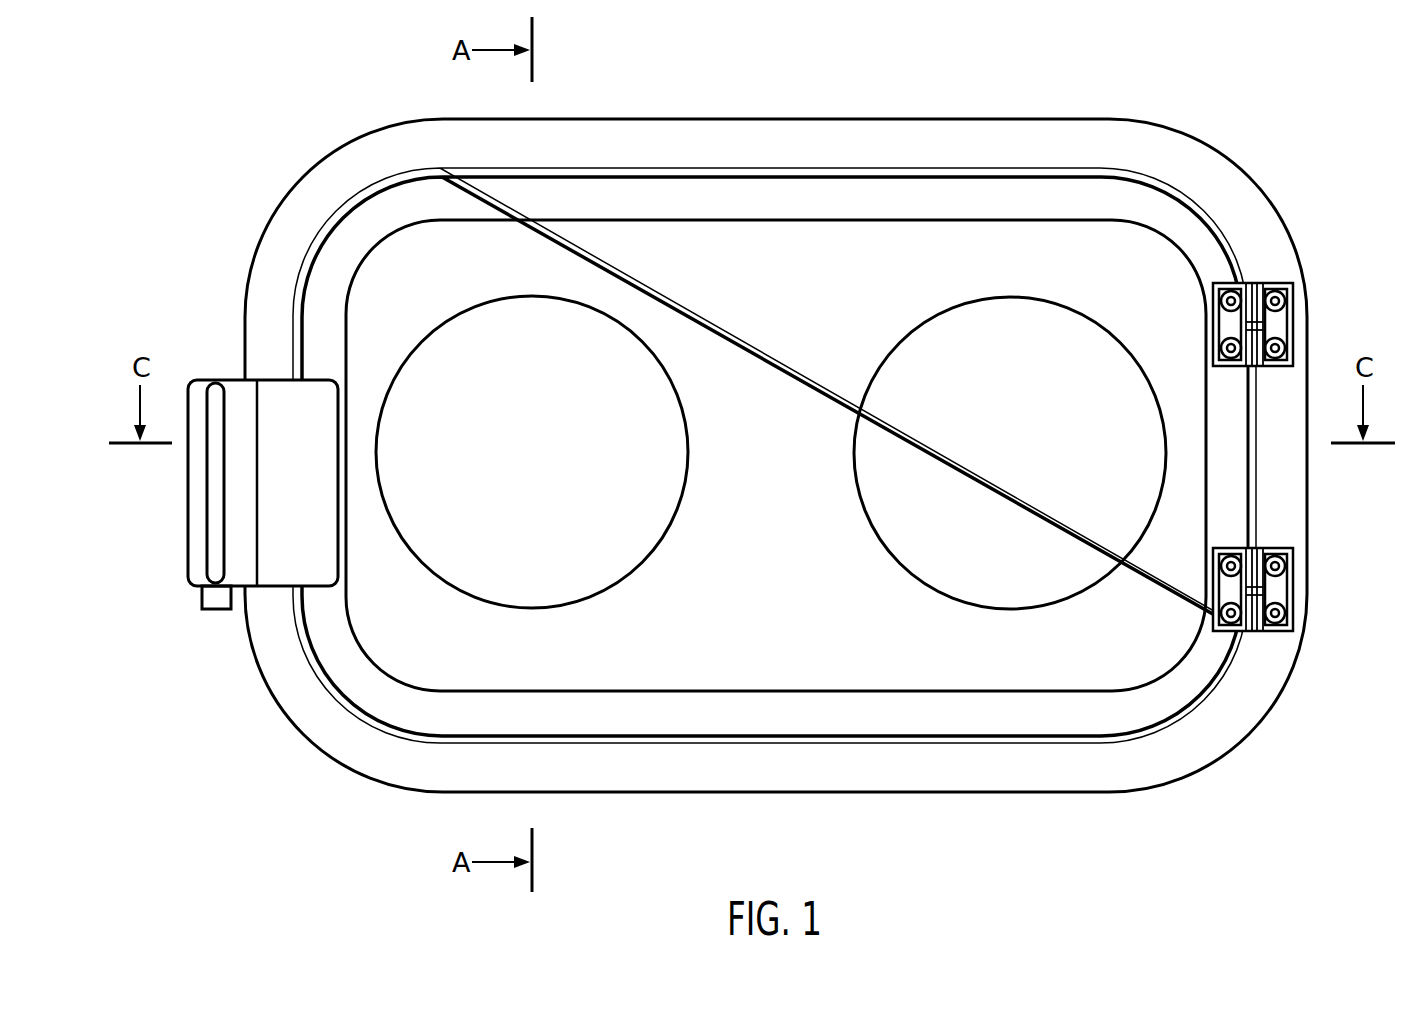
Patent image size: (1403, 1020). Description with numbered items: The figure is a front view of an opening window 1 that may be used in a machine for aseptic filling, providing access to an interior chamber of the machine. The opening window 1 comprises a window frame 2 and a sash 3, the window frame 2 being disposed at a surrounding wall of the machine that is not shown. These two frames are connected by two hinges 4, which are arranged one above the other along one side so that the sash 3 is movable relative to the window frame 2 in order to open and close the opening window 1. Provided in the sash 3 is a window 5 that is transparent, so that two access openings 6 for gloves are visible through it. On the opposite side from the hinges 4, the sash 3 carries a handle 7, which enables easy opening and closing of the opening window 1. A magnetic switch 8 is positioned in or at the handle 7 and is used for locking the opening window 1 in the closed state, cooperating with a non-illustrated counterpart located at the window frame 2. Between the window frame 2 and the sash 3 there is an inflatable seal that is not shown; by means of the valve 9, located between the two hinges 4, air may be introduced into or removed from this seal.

The opening window 1 is at (212, 98).
The window frame 2 is at (300, 702).
The sash 3 is at (372, 690).
The hinges 4 is at (1293, 289).
The window 5 is at (776, 666).
The access openings 6 is at (592, 527).
The handle 7 is at (216, 395).
The magnetic switch 8 is at (201, 596).
The valve 9 is at (1248, 467).